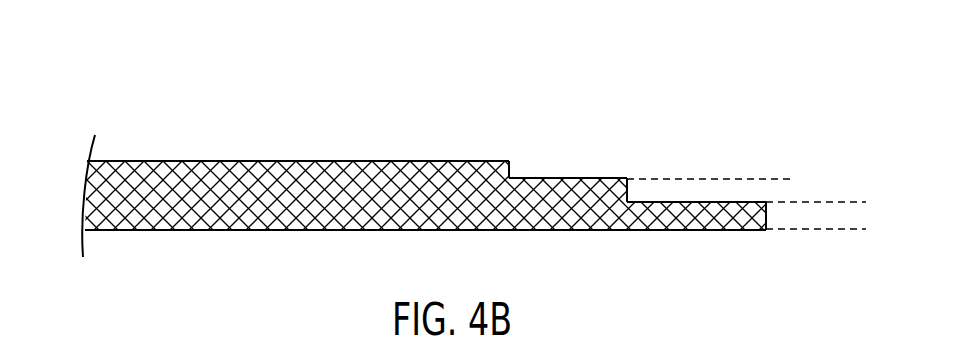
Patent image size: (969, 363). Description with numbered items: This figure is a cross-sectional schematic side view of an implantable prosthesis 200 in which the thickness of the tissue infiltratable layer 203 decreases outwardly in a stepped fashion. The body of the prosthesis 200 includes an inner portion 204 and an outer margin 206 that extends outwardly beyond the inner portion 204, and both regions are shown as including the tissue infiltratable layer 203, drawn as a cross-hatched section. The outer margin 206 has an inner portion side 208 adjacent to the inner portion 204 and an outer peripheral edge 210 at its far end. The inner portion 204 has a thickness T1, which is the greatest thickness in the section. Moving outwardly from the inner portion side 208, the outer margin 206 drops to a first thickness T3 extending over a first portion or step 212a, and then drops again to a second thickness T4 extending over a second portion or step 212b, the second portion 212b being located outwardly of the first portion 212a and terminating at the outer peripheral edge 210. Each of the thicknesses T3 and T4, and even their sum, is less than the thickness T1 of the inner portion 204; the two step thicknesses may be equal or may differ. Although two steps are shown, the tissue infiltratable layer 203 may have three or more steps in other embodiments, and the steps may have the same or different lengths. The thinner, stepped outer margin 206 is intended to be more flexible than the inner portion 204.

The prosthesis 200 is at (725, 98).
The tissue infiltratable layer 203 is at (138, 172).
The inner portion 204 is at (302, 160).
The inner portion side 208 is at (509, 162).
The first portion or step 212a is at (598, 176).
The outer margin 206 is at (627, 178).
The second portion or step 212b is at (678, 222).
The outer peripheral edge 210 is at (767, 230).
The thickness of the inner portion T1 is at (63, 172).
The first thickness T3 is at (791, 186).
The second thickness T4 is at (859, 160).